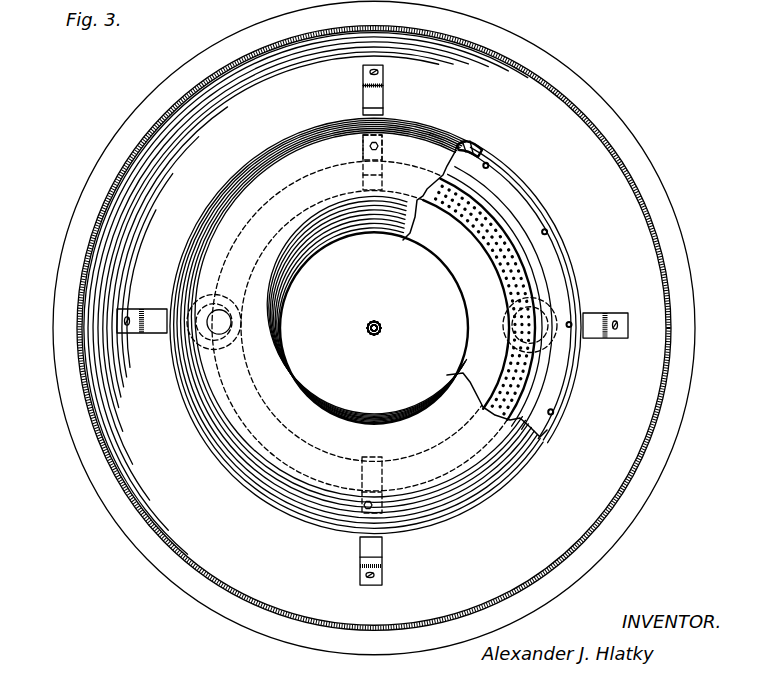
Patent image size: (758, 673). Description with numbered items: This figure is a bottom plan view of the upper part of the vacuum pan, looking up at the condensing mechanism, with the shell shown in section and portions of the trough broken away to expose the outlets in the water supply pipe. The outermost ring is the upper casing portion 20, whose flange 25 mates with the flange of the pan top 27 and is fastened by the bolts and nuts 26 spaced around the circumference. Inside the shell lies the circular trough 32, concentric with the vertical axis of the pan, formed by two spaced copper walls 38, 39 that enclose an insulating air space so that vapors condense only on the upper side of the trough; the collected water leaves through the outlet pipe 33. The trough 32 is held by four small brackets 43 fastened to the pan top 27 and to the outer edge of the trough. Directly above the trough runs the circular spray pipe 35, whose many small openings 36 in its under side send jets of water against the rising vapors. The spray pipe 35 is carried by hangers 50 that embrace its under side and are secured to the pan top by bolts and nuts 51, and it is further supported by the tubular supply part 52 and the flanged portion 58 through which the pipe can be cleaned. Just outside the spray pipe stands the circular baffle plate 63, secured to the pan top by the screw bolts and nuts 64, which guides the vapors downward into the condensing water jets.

The upper casing portion 20 is at (665, 263).
The flange 25 is at (686, 402).
The bolts and nuts 26 is at (651, 171).
The pan top 27 is at (568, 132).
The trough 32 is at (282, 250).
The outlet pipe 33 is at (586, 9).
The spray pipe 35 is at (502, 358).
The small openings 36 is at (500, 248).
The trough wall 38 is at (453, 151).
The trough wall 39 is at (472, 160).
The brackets 43 is at (383, 104).
The hangers 50 is at (382, 178).
The bolts and nuts 51 is at (383, 153).
The tubular part 52 is at (548, 320).
The flanged portion 58 is at (203, 332).
The baffle plate 63 is at (510, 210).
The screw bolts and nuts 64 is at (492, 170).